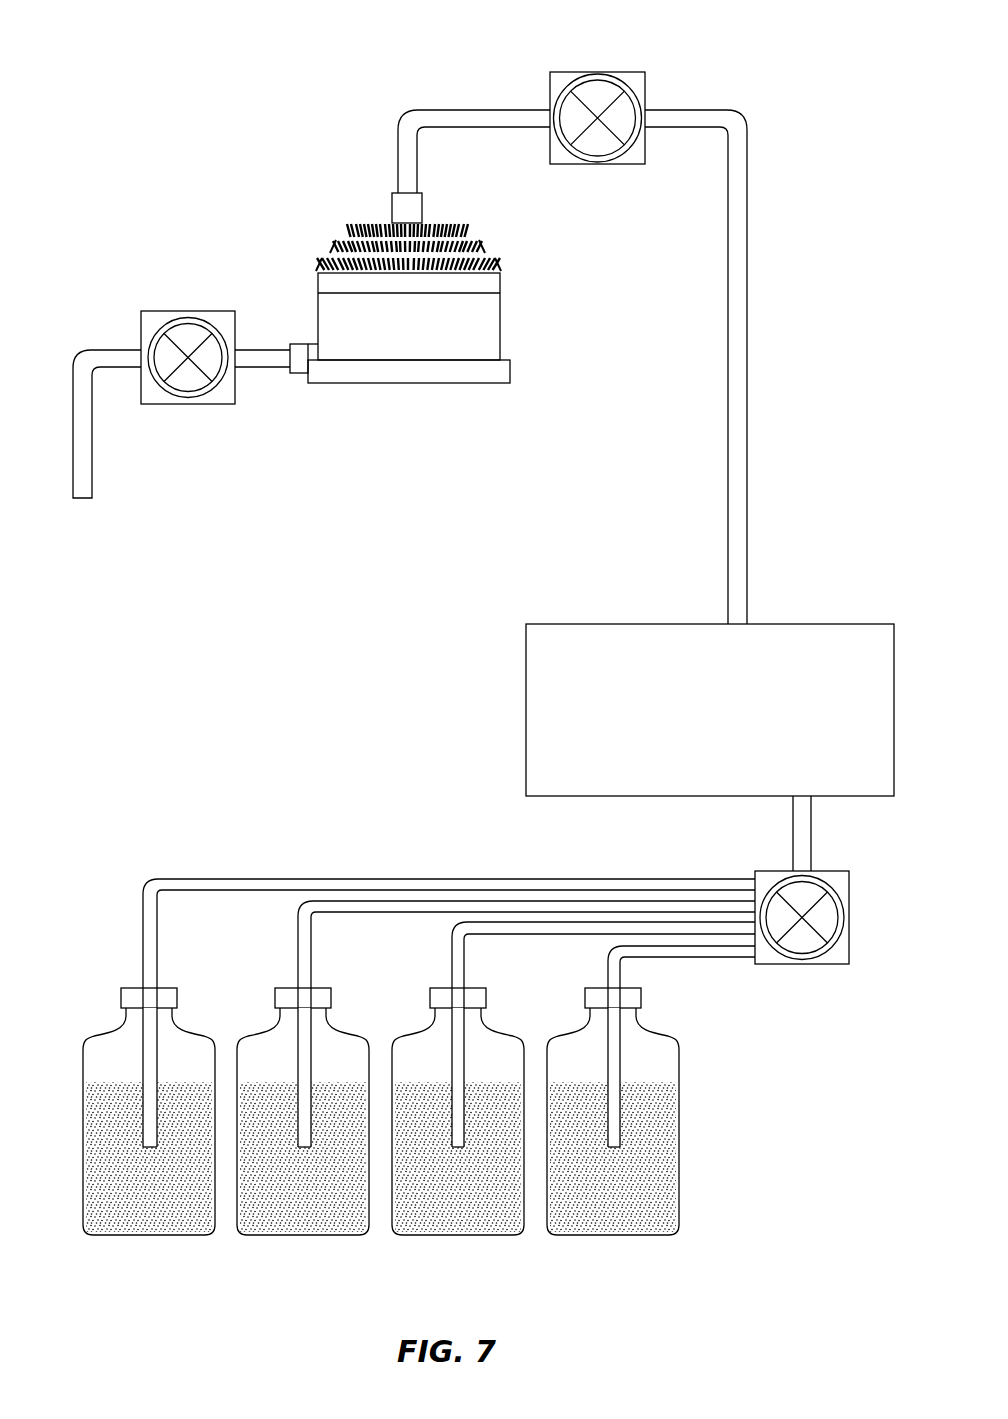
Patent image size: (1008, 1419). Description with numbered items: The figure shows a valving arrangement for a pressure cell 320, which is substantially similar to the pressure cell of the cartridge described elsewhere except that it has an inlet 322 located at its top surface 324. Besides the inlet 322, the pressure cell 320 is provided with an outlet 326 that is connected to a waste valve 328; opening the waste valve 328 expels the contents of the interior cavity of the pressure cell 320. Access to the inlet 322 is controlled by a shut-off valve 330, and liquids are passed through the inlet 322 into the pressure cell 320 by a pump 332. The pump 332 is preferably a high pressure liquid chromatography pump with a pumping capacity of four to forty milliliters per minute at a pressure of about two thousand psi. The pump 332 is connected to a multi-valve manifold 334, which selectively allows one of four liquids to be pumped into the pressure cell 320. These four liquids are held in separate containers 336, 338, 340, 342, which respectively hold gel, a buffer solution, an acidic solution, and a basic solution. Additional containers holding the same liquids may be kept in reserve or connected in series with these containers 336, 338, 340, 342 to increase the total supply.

The pressure cell 320 is at (396, 338).
The inlet 322 is at (423, 203).
The top surface 324 is at (378, 223).
The outlet 326 is at (300, 342).
The waste valve 328 is at (203, 311).
The shut-off valve 330 is at (590, 72).
The pump 332 is at (526, 735).
The multi-valve manifold 334 is at (849, 915).
The container 336 is at (152, 1237).
The container 338 is at (306, 1237).
The container 340 is at (458, 1237).
The container 342 is at (613, 1237).